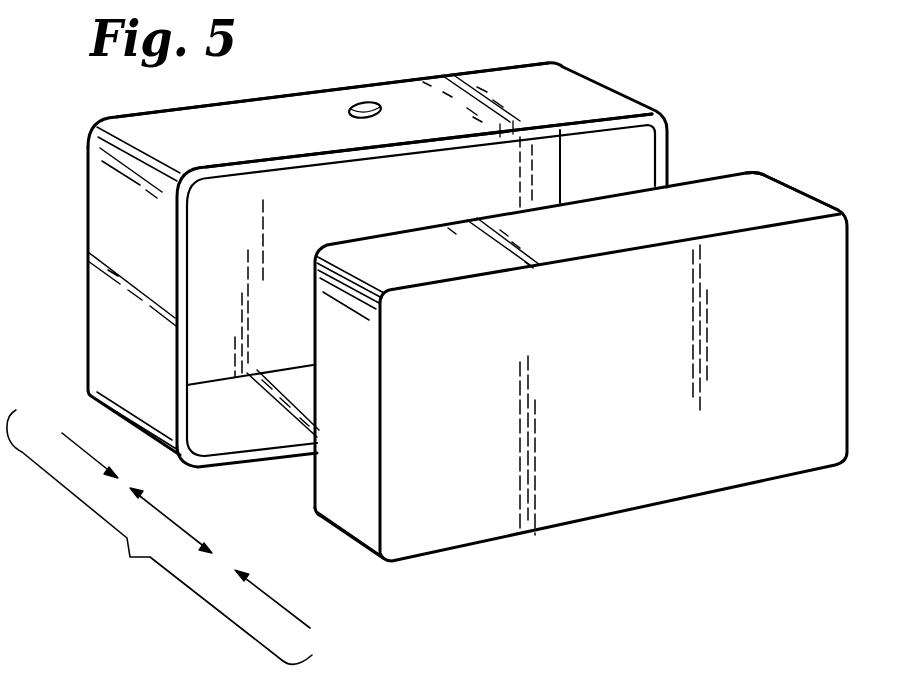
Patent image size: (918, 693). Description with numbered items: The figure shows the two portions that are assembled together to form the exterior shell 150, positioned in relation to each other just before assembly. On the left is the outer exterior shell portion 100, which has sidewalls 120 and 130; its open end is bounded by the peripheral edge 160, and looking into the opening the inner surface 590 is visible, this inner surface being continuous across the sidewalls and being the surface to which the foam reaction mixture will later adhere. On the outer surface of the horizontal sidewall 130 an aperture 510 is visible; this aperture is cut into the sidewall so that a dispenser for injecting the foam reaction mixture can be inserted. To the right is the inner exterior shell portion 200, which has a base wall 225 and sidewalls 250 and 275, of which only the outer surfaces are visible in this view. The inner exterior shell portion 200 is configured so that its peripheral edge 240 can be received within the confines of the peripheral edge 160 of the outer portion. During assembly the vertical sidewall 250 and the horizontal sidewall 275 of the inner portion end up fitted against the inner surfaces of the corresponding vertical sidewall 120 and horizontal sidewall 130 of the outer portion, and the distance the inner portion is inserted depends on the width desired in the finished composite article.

The outer exterior shell portion 100 is at (86, 282).
The sidewall 120 is at (103, 334).
The sidewall 130 is at (495, 88).
The exterior shell 150 is at (159, 537).
The peripheral edge 160 is at (423, 137).
The inner exterior shell portion 200 is at (398, 567).
The base wall 225 is at (638, 425).
The peripheral edge 240 is at (437, 227).
The sidewall 250 is at (357, 515).
The sidewall 275 is at (777, 200).
The aperture 510 is at (368, 102).
The inner surface 590 is at (207, 212).